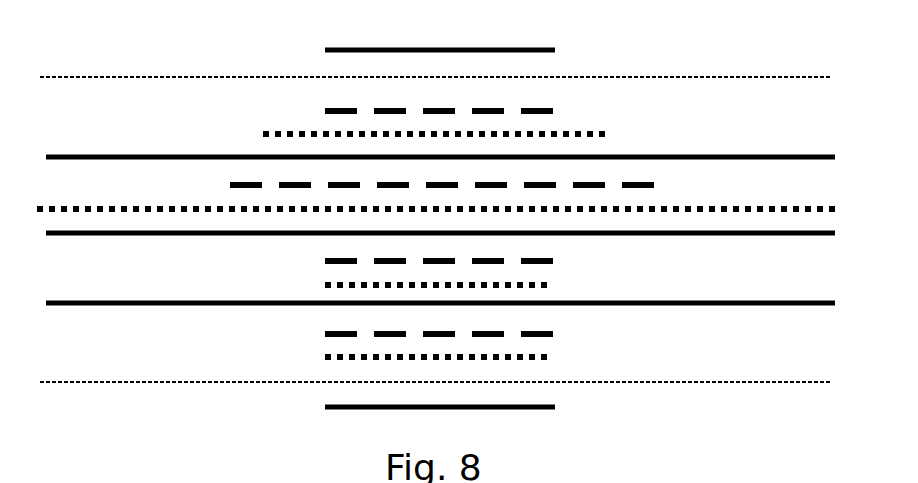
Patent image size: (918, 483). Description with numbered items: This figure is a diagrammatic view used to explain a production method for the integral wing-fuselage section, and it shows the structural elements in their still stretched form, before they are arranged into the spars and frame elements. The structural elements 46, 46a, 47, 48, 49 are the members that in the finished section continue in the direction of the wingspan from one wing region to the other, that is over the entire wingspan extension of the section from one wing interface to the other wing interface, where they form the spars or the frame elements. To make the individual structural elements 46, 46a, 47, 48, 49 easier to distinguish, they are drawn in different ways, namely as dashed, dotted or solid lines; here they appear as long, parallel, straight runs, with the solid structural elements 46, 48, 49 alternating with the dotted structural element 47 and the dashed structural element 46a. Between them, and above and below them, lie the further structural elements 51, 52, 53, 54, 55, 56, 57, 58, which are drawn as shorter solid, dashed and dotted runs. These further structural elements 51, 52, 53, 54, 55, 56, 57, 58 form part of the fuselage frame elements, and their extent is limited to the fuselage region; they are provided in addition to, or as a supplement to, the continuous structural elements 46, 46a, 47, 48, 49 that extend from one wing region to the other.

The structural element 46 is at (152, 156).
The structural element 46a is at (230, 185).
The structural element 47 is at (127, 208).
The structural element 48 is at (80, 235).
The structural element 49 is at (80, 305).
The further structural element 51 is at (540, 48).
The further structural element 52 is at (325, 111).
The further structural element 53 is at (263, 134).
The further structural element 54 is at (325, 261).
The further structural element 55 is at (325, 285).
The further structural element 56 is at (325, 334).
The further structural element 57 is at (325, 357).
The further structural element 58 is at (325, 407).